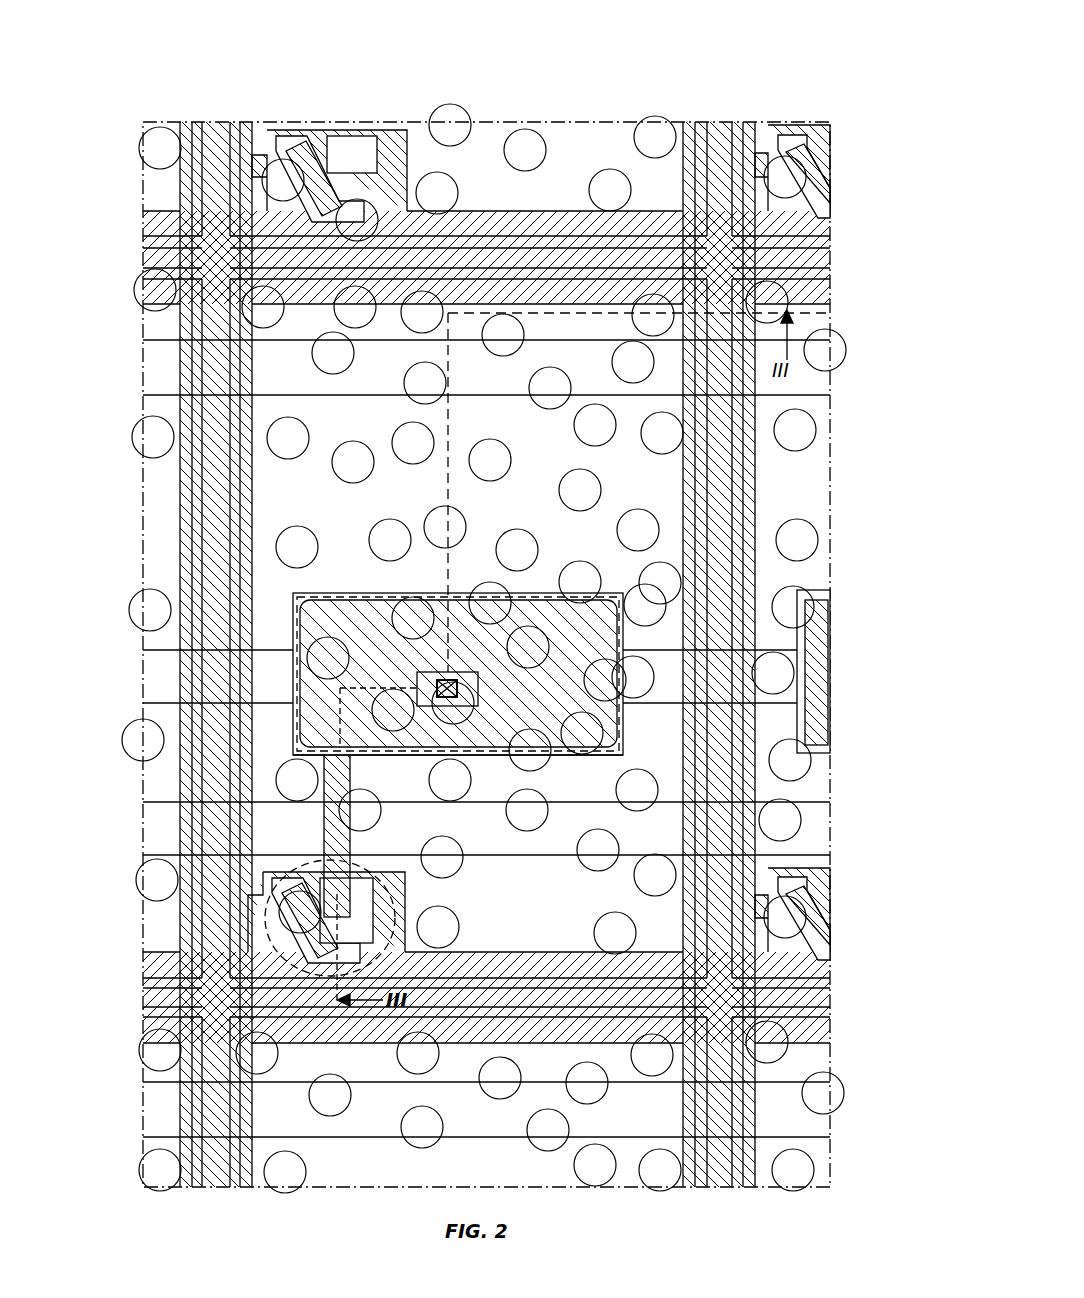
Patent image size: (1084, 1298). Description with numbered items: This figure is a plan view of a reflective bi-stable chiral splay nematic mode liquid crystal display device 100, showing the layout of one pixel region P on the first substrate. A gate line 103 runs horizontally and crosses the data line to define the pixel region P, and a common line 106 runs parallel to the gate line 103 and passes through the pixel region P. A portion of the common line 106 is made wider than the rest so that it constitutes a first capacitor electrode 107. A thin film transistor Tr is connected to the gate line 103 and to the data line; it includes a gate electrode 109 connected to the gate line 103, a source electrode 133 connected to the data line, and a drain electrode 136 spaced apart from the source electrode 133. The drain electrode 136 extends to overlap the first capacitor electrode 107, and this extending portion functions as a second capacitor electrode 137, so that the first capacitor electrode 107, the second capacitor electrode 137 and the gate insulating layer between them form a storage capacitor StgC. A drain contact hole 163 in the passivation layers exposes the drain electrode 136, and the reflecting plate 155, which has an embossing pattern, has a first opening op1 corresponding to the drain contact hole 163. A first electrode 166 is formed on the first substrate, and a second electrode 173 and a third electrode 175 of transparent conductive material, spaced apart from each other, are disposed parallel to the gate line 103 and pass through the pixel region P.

The reflective bi-stable chiral splay nematic mode liquid crystal display device 100 is at (748, 82).
The gate line 103 is at (150, 964).
The common line 106 is at (165, 662).
The first capacitor electrode 107 is at (577, 633).
The gate electrode 109 is at (365, 927).
The source electrode 133 is at (378, 882).
The drain electrode 136 is at (275, 878).
The second capacitor electrode 137 is at (812, 645).
The reflecting plate 155 is at (712, 467).
The drain contact hole 163 is at (438, 668).
The first electrode 166 is at (702, 508).
The second electrode 173 is at (818, 824).
The third electrode 175 is at (805, 368).
The first opening op1 is at (460, 657).
The pixel region P is at (278, 500).
The storage capacitor StgC is at (533, 592).
The thin film transistor Tr is at (316, 1046).